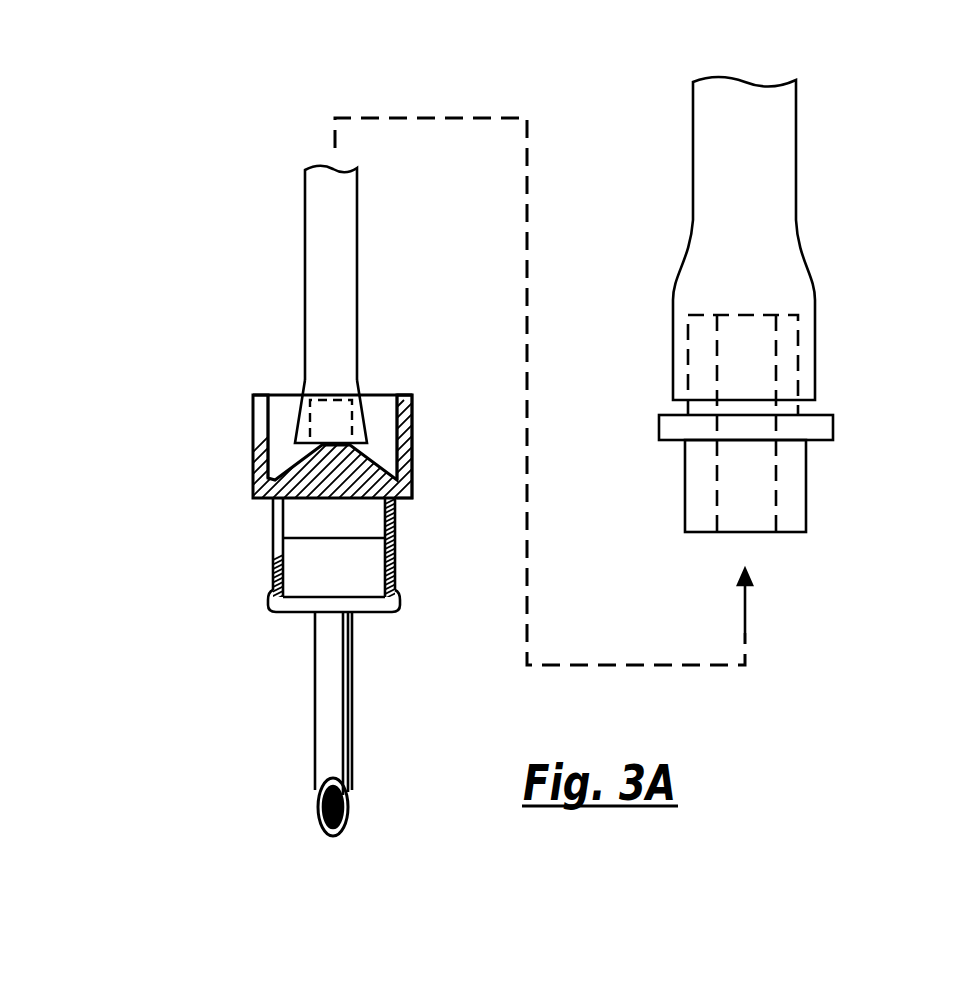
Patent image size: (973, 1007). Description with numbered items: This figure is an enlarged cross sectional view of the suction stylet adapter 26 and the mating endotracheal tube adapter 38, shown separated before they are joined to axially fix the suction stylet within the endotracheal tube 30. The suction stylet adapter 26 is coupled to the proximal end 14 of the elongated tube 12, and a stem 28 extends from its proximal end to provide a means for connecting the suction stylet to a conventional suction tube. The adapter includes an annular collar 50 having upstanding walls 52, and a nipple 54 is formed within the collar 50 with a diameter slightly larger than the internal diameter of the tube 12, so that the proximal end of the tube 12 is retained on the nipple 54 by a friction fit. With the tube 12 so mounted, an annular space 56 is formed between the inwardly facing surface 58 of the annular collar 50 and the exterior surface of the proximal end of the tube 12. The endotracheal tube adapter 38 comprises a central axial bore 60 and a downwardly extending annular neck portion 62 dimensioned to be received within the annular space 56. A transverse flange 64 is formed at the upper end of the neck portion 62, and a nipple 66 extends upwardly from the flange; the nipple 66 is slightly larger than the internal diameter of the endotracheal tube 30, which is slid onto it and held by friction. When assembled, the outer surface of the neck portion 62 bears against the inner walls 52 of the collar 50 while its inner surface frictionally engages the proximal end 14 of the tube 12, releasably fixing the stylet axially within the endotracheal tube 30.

The tube 12 is at (338, 276).
The proximal end 14 is at (356, 375).
The suction stylet adapter 26 is at (228, 502).
The stem 28 is at (327, 725).
The endotracheal tube 30 is at (752, 181).
The endotracheal tube adapter 38 is at (868, 429).
The annular collar 50 is at (252, 437).
The upstanding walls 52 is at (412, 432).
The nipple 54 is at (308, 398).
The annular space 56 is at (386, 390).
The inwardly facing surface 58 is at (283, 398).
The central axial bore 60 is at (763, 548).
The annular neck portion 62 is at (797, 490).
The transverse flange 64 is at (664, 424).
The nipple 66 is at (794, 316).